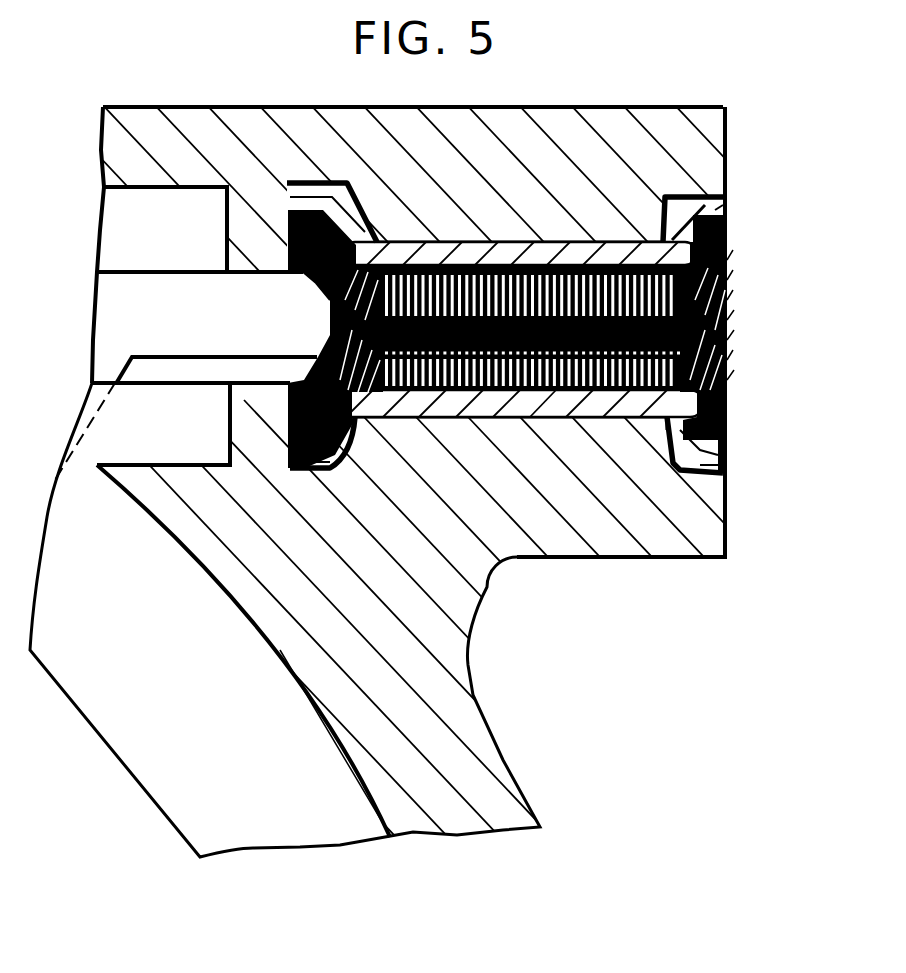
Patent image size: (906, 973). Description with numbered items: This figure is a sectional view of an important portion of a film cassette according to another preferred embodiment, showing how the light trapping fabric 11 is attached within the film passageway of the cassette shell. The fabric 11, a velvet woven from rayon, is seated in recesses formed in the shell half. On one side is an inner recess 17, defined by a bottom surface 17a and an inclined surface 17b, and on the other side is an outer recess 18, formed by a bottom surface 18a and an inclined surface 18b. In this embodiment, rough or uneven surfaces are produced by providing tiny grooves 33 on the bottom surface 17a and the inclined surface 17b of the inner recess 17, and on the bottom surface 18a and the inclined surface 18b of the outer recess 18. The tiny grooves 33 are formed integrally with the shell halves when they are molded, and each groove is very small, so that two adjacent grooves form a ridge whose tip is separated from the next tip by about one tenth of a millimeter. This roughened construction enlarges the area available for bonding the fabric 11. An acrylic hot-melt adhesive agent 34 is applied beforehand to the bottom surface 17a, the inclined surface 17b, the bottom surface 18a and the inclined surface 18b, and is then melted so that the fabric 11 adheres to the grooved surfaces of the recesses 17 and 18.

The light trapping fabric 11 is at (538, 403).
The inner recess 17 is at (293, 422).
The bottom surface 17a is at (312, 462).
The inclined surface 17b is at (328, 352).
The outer recess 18 is at (728, 392).
The bottom surface 18a is at (728, 473).
The inclined surface 18b is at (728, 425).
The tiny grooves 33 is at (328, 468).
The hot-melt adhesive agent 34 is at (295, 462).